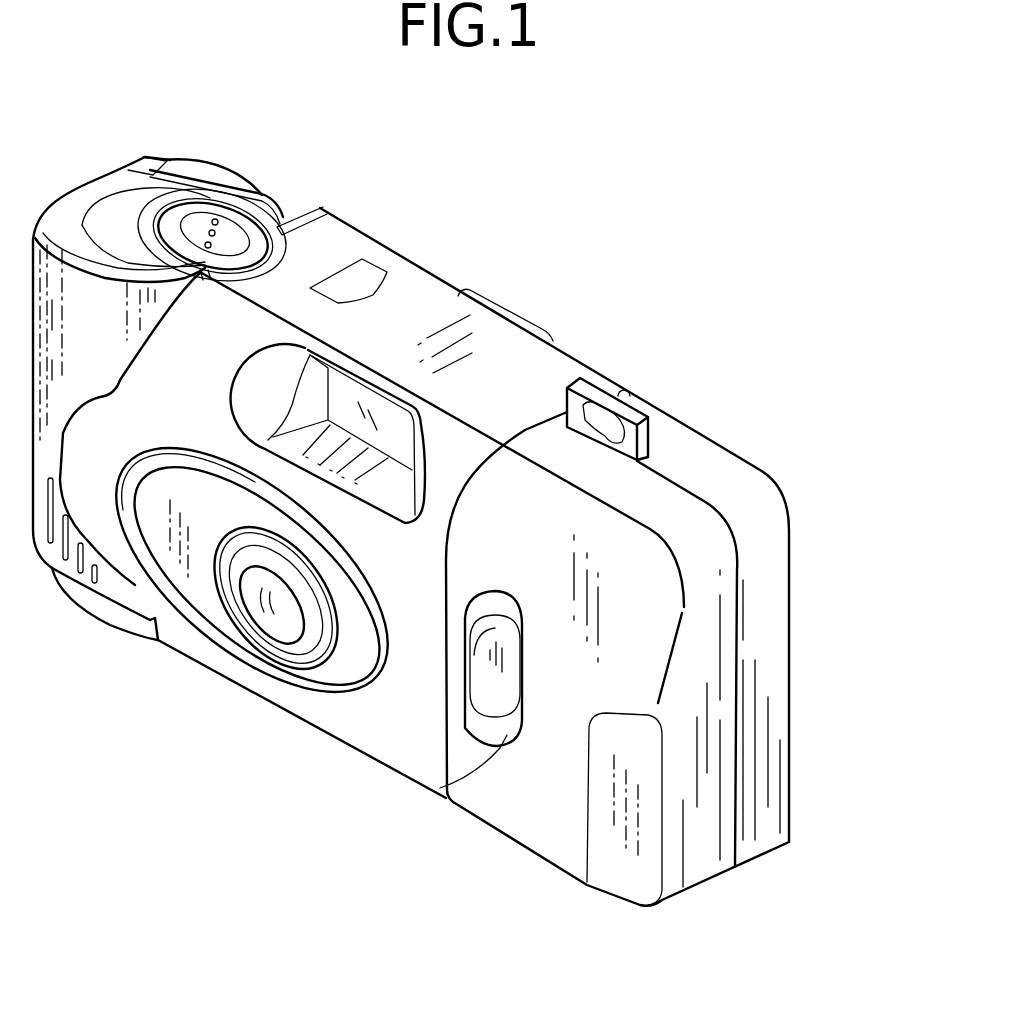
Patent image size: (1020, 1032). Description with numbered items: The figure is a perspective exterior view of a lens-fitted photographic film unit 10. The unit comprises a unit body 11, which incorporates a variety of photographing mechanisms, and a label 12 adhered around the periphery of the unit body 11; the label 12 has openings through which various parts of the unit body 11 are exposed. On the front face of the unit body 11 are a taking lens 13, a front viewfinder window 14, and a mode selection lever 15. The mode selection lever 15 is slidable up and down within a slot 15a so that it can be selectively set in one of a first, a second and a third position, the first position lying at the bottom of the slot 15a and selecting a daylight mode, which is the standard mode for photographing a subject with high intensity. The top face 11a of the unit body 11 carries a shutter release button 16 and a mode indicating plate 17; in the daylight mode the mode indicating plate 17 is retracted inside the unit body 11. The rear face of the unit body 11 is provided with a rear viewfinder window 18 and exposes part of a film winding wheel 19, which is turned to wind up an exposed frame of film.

The lens-fitted photographic film unit 10 is at (680, 300).
The unit body 11 is at (805, 642).
The top face 11a is at (690, 462).
The label 12 is at (322, 715).
The taking lens 13 is at (267, 637).
The front viewfinder window 14 is at (340, 401).
The mode selection lever 15 is at (480, 685).
The slot 15a is at (470, 778).
The shutter release button 16 is at (237, 238).
The mode indicating plate 17 is at (622, 410).
The rear viewfinder window 18 is at (480, 288).
The film winding wheel 19 is at (220, 168).